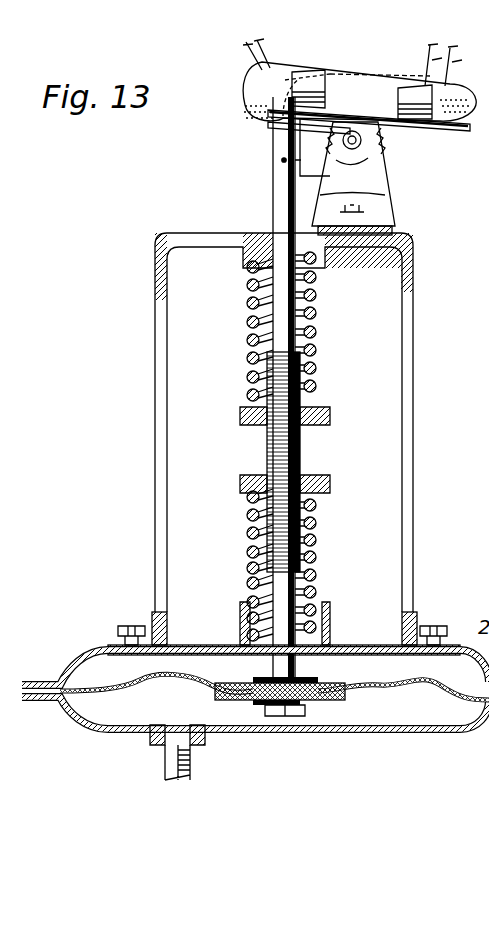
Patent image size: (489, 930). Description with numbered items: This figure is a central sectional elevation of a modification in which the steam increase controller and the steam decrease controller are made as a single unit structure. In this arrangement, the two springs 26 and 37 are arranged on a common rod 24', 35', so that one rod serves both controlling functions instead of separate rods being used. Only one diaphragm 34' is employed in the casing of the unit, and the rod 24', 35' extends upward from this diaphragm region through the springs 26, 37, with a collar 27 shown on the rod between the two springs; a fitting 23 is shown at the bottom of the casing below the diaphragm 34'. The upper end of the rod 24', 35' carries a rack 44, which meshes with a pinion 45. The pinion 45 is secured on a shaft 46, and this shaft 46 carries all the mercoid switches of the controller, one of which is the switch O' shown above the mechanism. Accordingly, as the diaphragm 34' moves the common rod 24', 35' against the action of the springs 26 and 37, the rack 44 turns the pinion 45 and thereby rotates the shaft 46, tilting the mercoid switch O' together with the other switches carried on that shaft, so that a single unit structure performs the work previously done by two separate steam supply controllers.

The mercury switch tube contact O' is at (359, 66).
The rack 44 is at (282, 160).
The pinion 45 is at (362, 147).
The shaft 46 is at (365, 162).
The spring 26 is at (318, 303).
The upper collar 27 is at (326, 410).
The common rod 24' is at (305, 517).
The common rod 35' is at (308, 480).
The spring 37 is at (318, 540).
The diaphragm 34' is at (274, 696).
The outlet nipple 23 is at (192, 768).